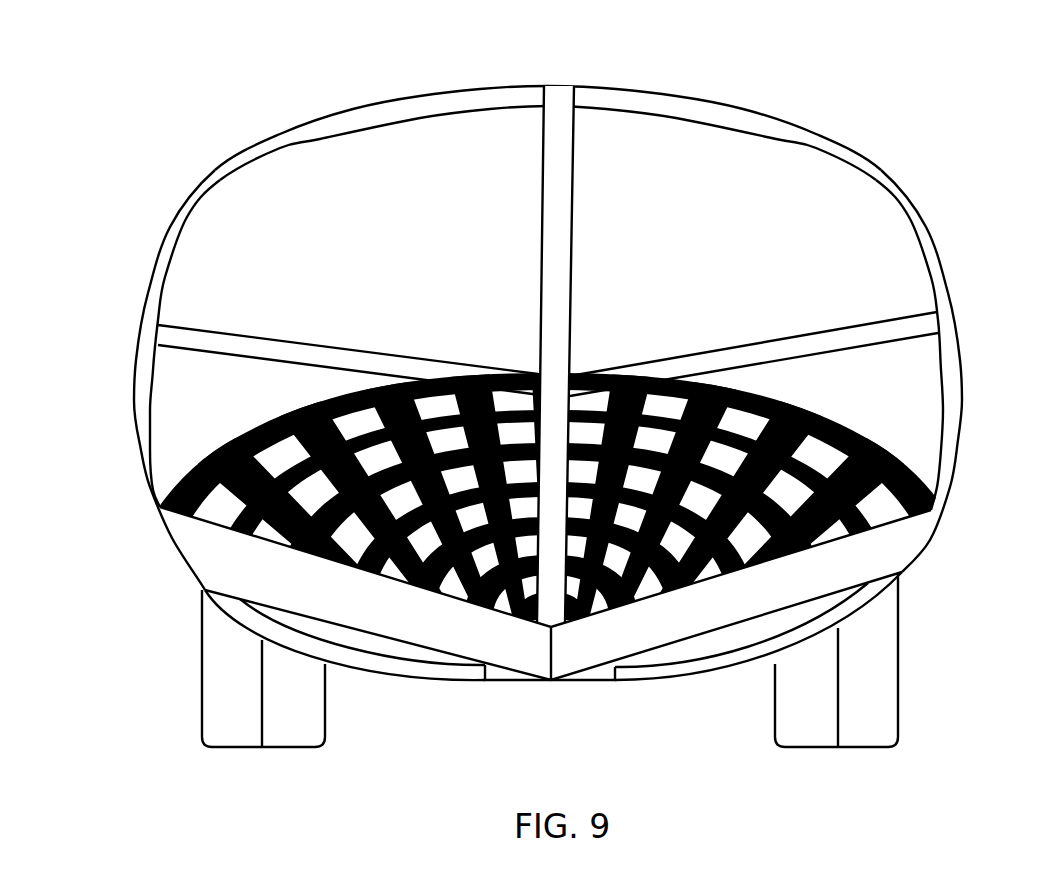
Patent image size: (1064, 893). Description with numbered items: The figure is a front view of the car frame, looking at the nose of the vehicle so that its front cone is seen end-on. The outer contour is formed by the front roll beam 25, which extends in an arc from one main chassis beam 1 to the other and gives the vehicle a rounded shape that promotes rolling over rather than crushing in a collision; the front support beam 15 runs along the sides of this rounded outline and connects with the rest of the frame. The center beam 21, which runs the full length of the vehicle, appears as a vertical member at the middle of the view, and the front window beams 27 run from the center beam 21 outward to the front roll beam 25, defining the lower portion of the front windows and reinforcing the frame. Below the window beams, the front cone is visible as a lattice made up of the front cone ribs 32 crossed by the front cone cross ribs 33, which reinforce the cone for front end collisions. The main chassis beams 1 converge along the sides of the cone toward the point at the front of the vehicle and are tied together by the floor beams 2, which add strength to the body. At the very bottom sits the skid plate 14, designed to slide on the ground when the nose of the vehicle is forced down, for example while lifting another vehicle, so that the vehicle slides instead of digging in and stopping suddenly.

The main chassis beam 1 is at (988, 567).
The floor beam 2 is at (725, 710).
The skid plate 14 is at (585, 678).
The front support beam 15 is at (1008, 413).
The center beam 21 is at (559, 100).
The front roll beam 25 is at (970, 150).
The front window beam 27 is at (817, 345).
The front cone rib 32 is at (863, 438).
The front cone cross rib 33 is at (288, 470).